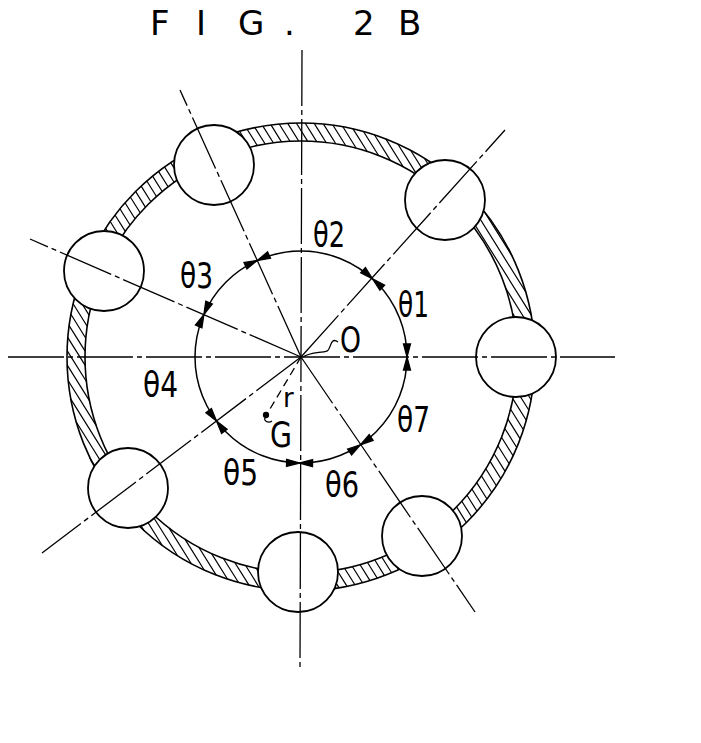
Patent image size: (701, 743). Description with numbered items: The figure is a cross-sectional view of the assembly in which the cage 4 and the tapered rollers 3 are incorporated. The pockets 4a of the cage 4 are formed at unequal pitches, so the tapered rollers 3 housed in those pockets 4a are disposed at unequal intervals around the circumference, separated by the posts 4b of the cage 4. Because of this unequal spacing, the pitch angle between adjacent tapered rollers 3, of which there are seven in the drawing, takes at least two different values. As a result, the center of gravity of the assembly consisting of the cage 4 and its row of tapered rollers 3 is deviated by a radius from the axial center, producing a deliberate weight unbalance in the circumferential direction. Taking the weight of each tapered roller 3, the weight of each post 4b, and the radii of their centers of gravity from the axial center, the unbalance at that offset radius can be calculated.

The tapered roller 3 is at (444, 172).
The cage 4 is at (332, 335).
The pocket 4a is at (509, 244).
The post 4b is at (378, 139).